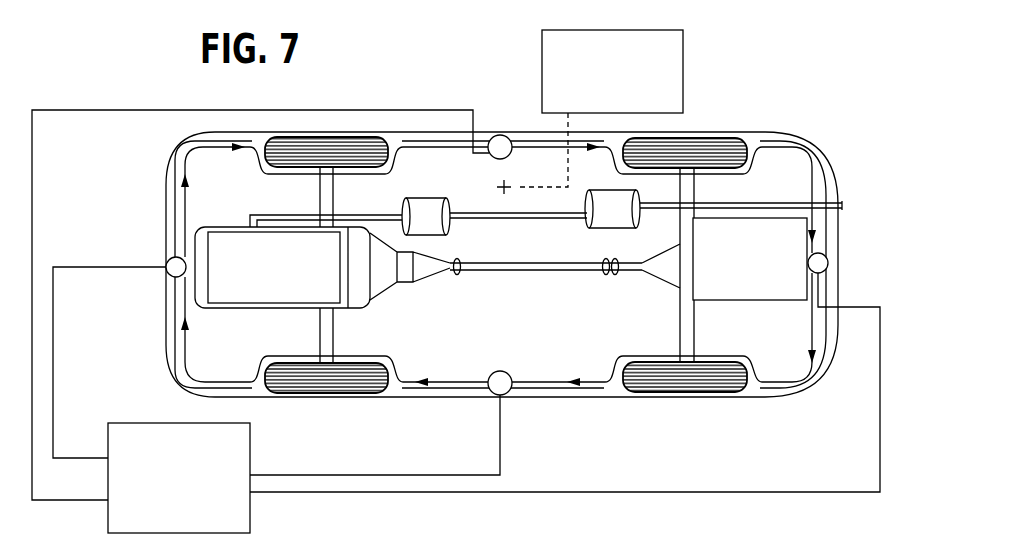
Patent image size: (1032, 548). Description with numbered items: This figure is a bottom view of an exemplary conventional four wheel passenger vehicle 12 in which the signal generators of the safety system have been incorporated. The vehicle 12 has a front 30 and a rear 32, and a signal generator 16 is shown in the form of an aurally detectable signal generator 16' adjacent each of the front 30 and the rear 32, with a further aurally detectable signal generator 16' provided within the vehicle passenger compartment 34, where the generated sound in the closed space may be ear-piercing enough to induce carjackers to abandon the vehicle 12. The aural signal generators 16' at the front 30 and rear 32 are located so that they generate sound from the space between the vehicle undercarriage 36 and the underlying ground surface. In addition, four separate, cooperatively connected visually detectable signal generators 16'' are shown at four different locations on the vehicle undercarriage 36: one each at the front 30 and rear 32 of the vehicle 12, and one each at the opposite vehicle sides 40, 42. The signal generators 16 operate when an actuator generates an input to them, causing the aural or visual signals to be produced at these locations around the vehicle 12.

The vehicle 12 is at (782, 182).
The signal generator 16 is at (750, 259).
The aurally detectable signal generator 16' is at (439, 169).
The visually detectable signal generator 16'' is at (456, 321).
The front 30 is at (160, 296).
The rear 32 is at (847, 263).
The passenger compartment 34 is at (578, 335).
The vehicle undercarriage 36 is at (448, 349).
The vehicle side 40 is at (488, 124).
The vehicle side 42 is at (527, 403).